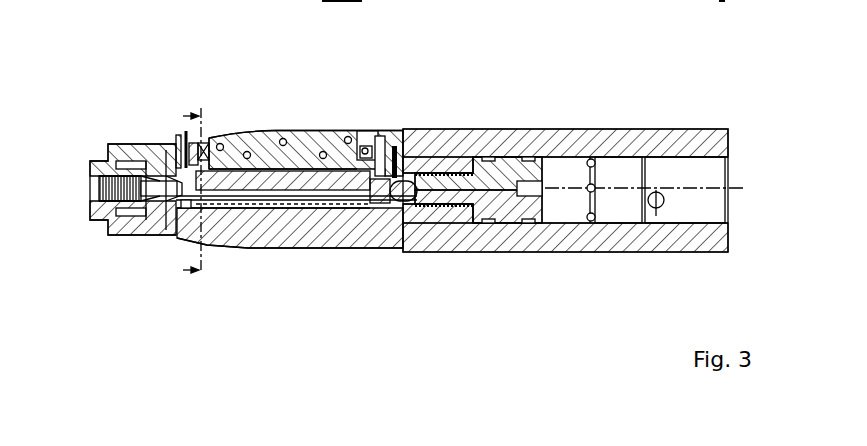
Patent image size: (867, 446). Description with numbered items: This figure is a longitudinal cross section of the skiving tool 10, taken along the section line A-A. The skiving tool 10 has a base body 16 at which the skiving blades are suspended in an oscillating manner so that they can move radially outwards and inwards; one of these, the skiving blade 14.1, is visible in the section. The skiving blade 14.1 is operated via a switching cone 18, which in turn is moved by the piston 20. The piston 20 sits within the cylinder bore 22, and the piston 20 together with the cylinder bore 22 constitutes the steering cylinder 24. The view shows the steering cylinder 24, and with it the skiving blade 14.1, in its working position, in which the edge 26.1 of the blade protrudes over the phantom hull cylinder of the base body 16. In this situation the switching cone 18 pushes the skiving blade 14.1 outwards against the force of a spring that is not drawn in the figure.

The skiving tool 10 is at (398, 182).
The skiving blade 14.1 is at (318, 130).
The base body 16 is at (700, 103).
The switching cone 18 is at (323, 207).
The piston 20 is at (493, 218).
The cylinder bore 22 is at (569, 173).
The steering cylinder 24 is at (539, 107).
The edge 26.1 is at (243, 114).